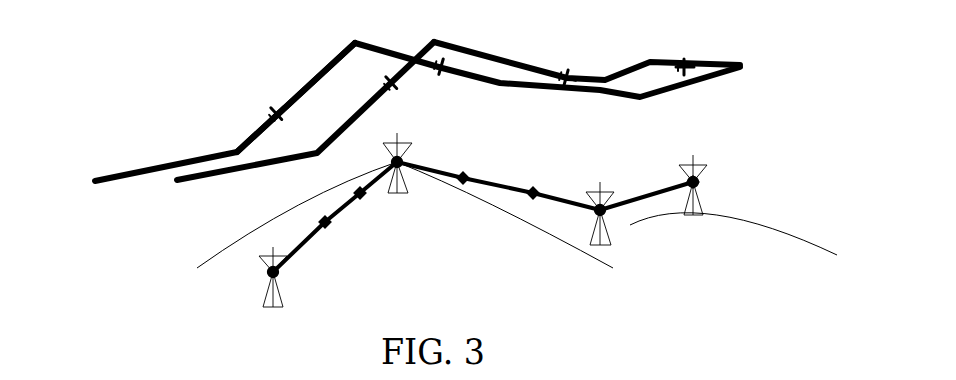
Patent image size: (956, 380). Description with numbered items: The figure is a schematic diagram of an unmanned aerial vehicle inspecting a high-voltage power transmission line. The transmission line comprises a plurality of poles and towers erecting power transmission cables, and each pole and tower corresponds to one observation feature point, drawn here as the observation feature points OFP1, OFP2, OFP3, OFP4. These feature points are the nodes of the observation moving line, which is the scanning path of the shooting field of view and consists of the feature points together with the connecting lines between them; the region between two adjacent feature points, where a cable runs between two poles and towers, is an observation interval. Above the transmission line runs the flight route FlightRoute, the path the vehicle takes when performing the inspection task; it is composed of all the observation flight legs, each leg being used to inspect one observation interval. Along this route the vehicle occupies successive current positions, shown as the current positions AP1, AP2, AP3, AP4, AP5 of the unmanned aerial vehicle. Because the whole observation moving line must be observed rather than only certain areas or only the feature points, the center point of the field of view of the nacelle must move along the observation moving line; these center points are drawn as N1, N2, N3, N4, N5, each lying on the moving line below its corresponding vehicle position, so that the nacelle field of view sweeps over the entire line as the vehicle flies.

The current position #1 of the unmanned aerial vehicle AP1 is at (325, 222).
The current position #2 of the unmanned aerial vehicle AP2 is at (459, 93).
The current position #3 of the unmanned aerial vehicle AP3 is at (695, 97).
The current position #4 of the unmanned aerial vehicle AP4 is at (572, 110).
The current position #5 of the unmanned aerial vehicle AP5 is at (379, 102).
The observation feature point #1 OFP1 is at (250, 277).
The observation feature point #2 OFP2 is at (418, 163).
The observation feature point #3 OFP3 is at (623, 213).
The observation feature point #4 OFP4 is at (718, 185).
The center point of the field of view of the nacelle #1 N1 is at (340, 231).
The center point of the field of view of the nacelle #2 N2 is at (451, 187).
The center point of the field of view of the nacelle #3 N3 is at (712, 188).
The center point of the field of view of the nacelle #4 N4 is at (536, 202).
The center point of the field of view of the nacelle #5 N5 is at (348, 188).
The flight route FlightRoute is at (391, 121).